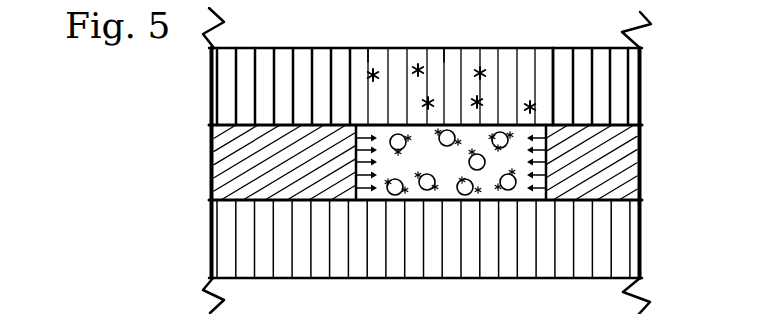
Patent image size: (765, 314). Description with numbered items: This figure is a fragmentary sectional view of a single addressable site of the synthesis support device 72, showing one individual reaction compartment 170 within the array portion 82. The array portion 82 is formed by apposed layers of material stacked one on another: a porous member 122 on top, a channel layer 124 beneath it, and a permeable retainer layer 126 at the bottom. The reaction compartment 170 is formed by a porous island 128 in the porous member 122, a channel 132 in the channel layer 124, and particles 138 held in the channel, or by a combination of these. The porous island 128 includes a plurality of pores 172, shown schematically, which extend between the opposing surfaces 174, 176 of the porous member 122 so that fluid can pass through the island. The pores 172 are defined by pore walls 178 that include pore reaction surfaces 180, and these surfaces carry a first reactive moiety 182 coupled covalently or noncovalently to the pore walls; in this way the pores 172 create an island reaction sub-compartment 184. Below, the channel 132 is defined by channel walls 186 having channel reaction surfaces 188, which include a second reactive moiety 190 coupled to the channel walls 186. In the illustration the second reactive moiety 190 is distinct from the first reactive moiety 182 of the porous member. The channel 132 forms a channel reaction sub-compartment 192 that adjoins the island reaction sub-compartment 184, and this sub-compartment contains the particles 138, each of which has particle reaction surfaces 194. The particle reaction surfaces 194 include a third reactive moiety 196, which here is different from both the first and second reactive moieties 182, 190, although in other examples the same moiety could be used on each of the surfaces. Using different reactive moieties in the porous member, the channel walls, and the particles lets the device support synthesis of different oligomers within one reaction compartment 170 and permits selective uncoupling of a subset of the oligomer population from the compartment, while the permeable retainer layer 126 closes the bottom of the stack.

The support device 72 is at (116, 122).
The array portion 82 is at (267, 28).
The porous member 122 is at (227, 88).
The channel layer 124 is at (227, 158).
The permeable retainer layer 126 is at (225, 253).
The porous island 128 is at (378, 47).
The channel 132 is at (360, 203).
The particles 138 is at (468, 196).
The reaction compartment 170 is at (358, 44).
The pores 172 is at (453, 60).
The first opposing surface 174 is at (586, 47).
The second opposing surface 176 is at (606, 138).
The pore walls 178 is at (476, 66).
The pore reaction surfaces 180 is at (486, 66).
The first reactive moiety 182 is at (532, 103).
The island reaction sub-compartment 184 is at (545, 88).
The channel walls 186 is at (528, 203).
The channel reaction surfaces 188 is at (560, 181).
The second reactive moiety 190 is at (548, 150).
The channel reaction sub-compartment 192 is at (486, 178).
The particle reaction surfaces 194 is at (398, 196).
The third reactive moiety 196 is at (438, 134).